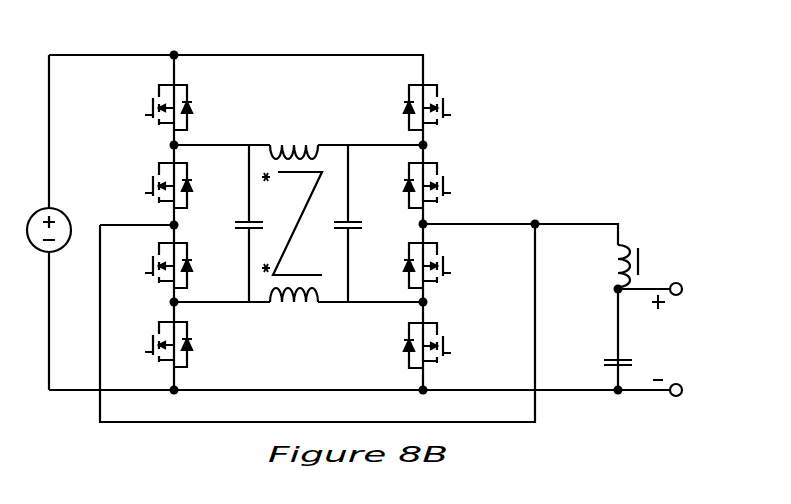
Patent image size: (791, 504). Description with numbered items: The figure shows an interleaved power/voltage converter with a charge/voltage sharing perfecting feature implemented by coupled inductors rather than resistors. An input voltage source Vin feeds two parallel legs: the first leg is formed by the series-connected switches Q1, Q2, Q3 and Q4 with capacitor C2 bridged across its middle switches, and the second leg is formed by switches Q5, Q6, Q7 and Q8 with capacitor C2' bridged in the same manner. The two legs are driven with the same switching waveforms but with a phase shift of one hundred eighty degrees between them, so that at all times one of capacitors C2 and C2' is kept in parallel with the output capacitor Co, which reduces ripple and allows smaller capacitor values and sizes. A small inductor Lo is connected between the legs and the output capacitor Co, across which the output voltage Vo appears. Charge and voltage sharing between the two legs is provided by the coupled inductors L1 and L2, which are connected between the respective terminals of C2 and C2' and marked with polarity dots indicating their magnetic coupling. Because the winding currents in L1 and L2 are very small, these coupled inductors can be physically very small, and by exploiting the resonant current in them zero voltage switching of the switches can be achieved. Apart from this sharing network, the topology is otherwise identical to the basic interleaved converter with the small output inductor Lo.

The switch Q1 is at (153, 107).
The switch Q2 is at (152, 185).
The switch Q3 is at (153, 265).
The switch Q4 is at (153, 344).
The switch Q5 is at (445, 107).
The switch Q6 is at (443, 185).
The switch Q7 is at (439, 265).
The switch Q8 is at (439, 345).
The coupled inductor L1 is at (294, 136).
The coupled inductor L2 is at (294, 316).
The capacitor C2 is at (235, 223).
The capacitor C2' is at (361, 223).
The small inductor Lo is at (613, 266).
The output capacitor Co is at (598, 349).
The input voltage Vin is at (55, 246).
The output voltage Vo is at (673, 347).